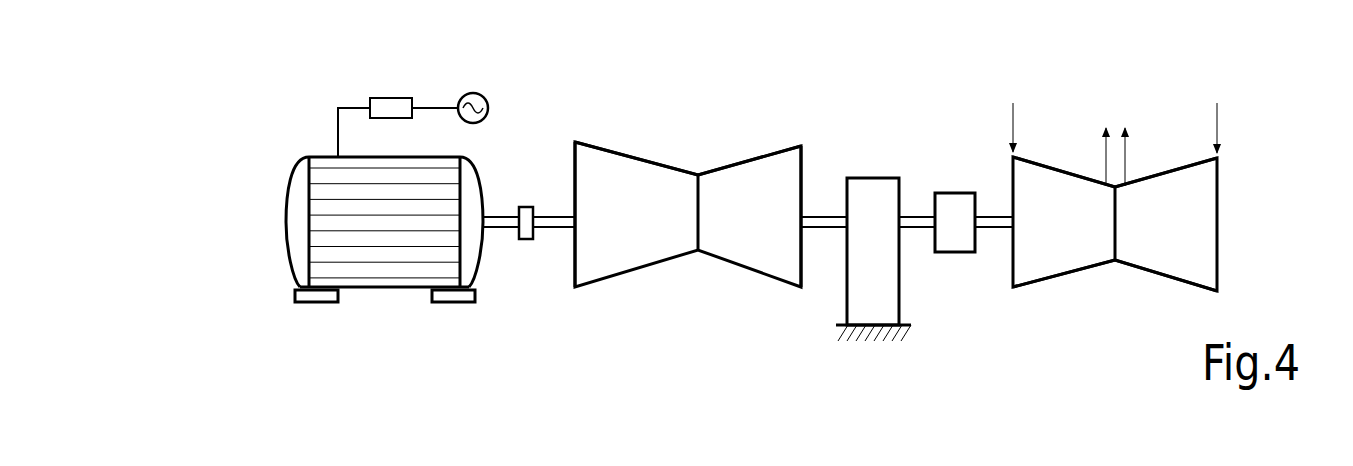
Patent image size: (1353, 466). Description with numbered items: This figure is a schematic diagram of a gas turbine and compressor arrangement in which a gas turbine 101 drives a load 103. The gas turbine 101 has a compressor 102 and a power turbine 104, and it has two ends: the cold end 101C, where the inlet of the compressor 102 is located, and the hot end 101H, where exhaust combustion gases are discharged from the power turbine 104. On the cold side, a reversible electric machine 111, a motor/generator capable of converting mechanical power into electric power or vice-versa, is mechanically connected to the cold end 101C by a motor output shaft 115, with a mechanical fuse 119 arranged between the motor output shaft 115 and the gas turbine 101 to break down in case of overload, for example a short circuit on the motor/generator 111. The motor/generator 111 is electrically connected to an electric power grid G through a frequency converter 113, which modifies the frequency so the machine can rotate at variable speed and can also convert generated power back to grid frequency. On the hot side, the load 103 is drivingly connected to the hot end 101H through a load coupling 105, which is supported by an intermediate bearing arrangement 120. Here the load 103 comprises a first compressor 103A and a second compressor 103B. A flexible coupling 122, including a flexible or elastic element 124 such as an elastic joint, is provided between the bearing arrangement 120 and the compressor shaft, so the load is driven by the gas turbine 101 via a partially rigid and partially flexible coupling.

The gas turbine 101 is at (733, 143).
The cold end 101C is at (573, 262).
The hot end 101H is at (800, 253).
The compressor 102 is at (640, 158).
The power turbine 104 is at (757, 155).
The load coupling 105 is at (815, 215).
The reversible electric machine 111 is at (278, 262).
The frequency converter 113 is at (382, 98).
The electric power grid G is at (470, 92).
The motor output shaft 115 is at (498, 222).
The mechanical fuse 119 is at (528, 240).
The intermediate bearing arrangement 120 is at (890, 190).
The flexible coupling 122 is at (925, 195).
The flexible or elastic element 124 is at (948, 247).
The load 103 is at (1223, 170).
The first compressor 103A is at (1087, 257).
The second compressor 103B is at (1172, 262).